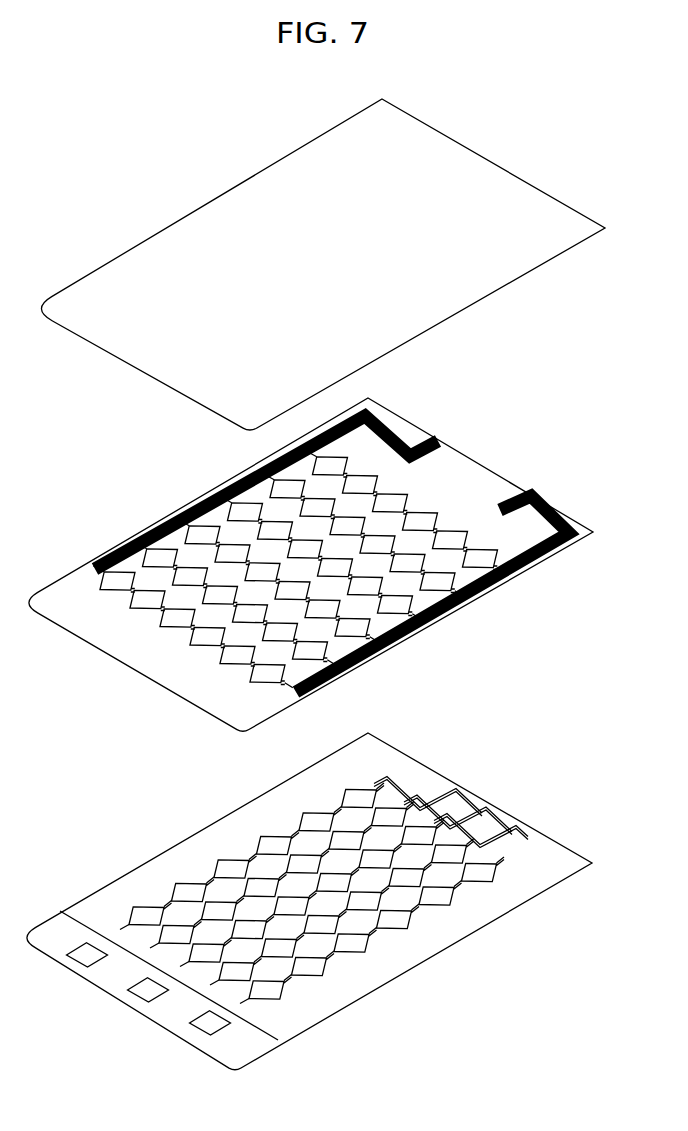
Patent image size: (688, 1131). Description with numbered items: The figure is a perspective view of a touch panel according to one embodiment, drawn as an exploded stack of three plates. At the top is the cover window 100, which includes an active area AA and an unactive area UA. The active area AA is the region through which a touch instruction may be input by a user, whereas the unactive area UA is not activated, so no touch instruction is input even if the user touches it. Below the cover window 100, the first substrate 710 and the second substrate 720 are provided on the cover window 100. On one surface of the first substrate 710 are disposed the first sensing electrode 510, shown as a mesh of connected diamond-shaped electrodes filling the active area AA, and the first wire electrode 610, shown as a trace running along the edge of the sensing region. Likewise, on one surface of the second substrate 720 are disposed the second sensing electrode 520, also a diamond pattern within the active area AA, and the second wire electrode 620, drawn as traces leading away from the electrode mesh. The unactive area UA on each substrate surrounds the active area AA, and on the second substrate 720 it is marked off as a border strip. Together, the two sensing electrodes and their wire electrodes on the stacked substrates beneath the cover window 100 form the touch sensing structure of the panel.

The cover window 100 is at (112, 254).
The first substrate 710 is at (230, 478).
The first sensing electrode 510 is at (490, 558).
The first wire electrode 610 is at (555, 541).
The second substrate 720 is at (225, 813).
The second sensing electrode 520 is at (483, 872).
The second wire electrode 620 is at (482, 798).
The active area AA is at (430, 598).
The unactive area UA is at (167, 665).